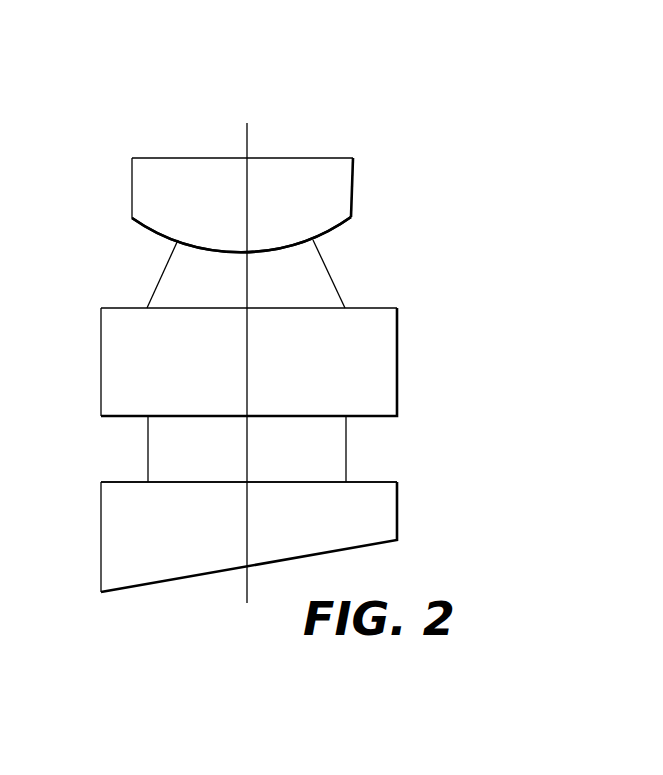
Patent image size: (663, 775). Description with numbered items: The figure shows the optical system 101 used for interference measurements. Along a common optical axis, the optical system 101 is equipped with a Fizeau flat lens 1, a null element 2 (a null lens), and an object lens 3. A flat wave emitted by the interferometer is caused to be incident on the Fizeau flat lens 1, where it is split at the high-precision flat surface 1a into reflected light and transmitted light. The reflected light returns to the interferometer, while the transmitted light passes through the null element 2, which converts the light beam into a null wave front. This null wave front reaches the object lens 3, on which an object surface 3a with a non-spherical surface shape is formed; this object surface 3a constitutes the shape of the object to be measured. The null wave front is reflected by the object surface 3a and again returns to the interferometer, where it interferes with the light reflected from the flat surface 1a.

The optical system 101 is at (347, 123).
The object lens 3 is at (340, 188).
The object surface 3a is at (337, 228).
The null element 2 is at (385, 363).
The Fizeau flat lens 1 is at (387, 525).
The high-precision flat surface 1a is at (372, 480).